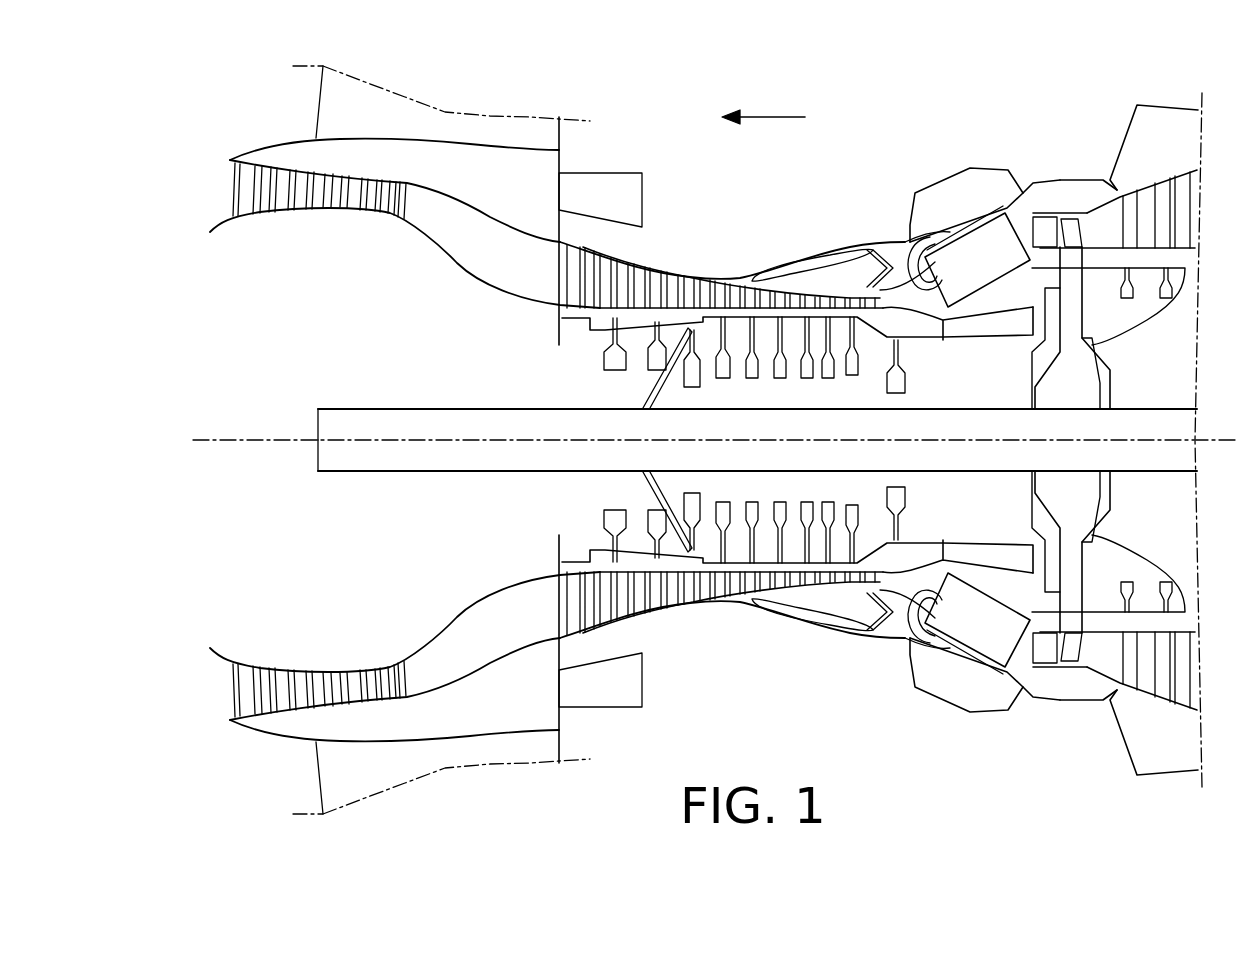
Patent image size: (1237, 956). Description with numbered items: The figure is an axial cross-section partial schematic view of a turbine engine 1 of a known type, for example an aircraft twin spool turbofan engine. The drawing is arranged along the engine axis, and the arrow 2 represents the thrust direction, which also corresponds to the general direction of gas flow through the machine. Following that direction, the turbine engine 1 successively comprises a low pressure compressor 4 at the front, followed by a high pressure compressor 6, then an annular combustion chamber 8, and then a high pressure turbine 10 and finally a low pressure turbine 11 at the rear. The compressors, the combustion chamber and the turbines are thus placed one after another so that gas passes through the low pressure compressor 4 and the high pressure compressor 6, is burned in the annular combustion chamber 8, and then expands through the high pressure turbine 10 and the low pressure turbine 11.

The turbine engine 1 is at (715, 439).
The arrow 2 is at (772, 115).
The low pressure compressor 4 is at (327, 213).
The high pressure compressor 6 is at (769, 318).
The annular combustion chamber 8 is at (986, 268).
The high pressure turbine 10 is at (1055, 222).
The low pressure turbine 11 is at (1118, 222).